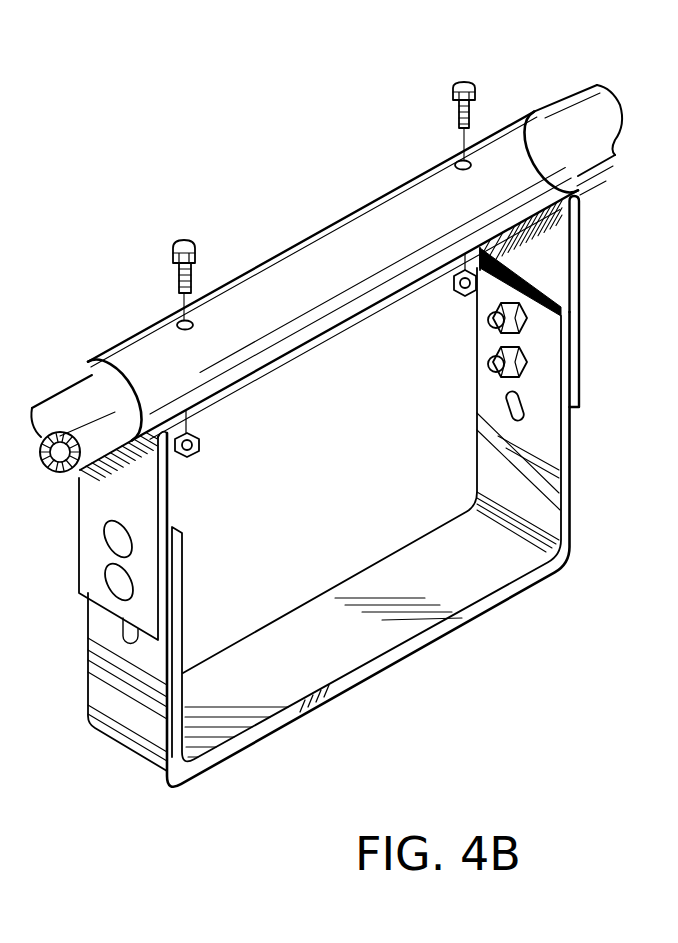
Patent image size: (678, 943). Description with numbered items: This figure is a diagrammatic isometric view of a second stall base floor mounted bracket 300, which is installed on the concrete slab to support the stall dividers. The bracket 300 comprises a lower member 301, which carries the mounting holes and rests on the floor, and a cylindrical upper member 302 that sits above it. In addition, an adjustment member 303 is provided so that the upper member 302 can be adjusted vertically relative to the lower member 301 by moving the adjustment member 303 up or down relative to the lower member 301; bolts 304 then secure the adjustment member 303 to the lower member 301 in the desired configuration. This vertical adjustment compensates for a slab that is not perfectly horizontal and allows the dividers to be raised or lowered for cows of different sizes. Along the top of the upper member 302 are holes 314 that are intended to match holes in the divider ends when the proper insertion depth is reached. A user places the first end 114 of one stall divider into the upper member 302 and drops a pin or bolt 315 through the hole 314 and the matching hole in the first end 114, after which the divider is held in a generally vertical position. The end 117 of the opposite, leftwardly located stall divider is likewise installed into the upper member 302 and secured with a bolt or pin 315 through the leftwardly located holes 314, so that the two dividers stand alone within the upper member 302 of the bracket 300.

The stall base floor mounted bracket 300 is at (264, 178).
The lower member 301 is at (573, 511).
The upper member 302 is at (518, 118).
The adjustment member 303 is at (580, 258).
The bolts 304 is at (490, 331).
The holes 314 is at (178, 321).
The pin or bolt 315 is at (176, 240).
The first end 114 is at (597, 110).
The end 117 is at (73, 401).